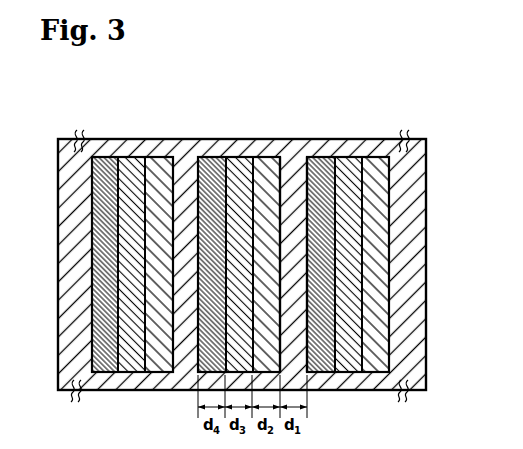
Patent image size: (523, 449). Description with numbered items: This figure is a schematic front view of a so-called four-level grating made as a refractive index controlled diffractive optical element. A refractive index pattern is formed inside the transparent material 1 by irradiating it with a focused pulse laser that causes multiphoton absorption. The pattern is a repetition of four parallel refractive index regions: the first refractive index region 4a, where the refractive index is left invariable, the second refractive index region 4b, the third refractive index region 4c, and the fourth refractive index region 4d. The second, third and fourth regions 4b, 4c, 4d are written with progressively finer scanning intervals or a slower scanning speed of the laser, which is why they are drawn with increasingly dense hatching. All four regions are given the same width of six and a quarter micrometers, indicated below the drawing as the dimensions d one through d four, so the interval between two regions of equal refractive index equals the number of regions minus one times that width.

The transparent material 1 is at (338, 138).
The first refractive index region 4a is at (292, 162).
The second refractive index region 4b is at (267, 173).
The third refractive index region 4c is at (239, 190).
The fourth refractive index region 4d is at (213, 190).